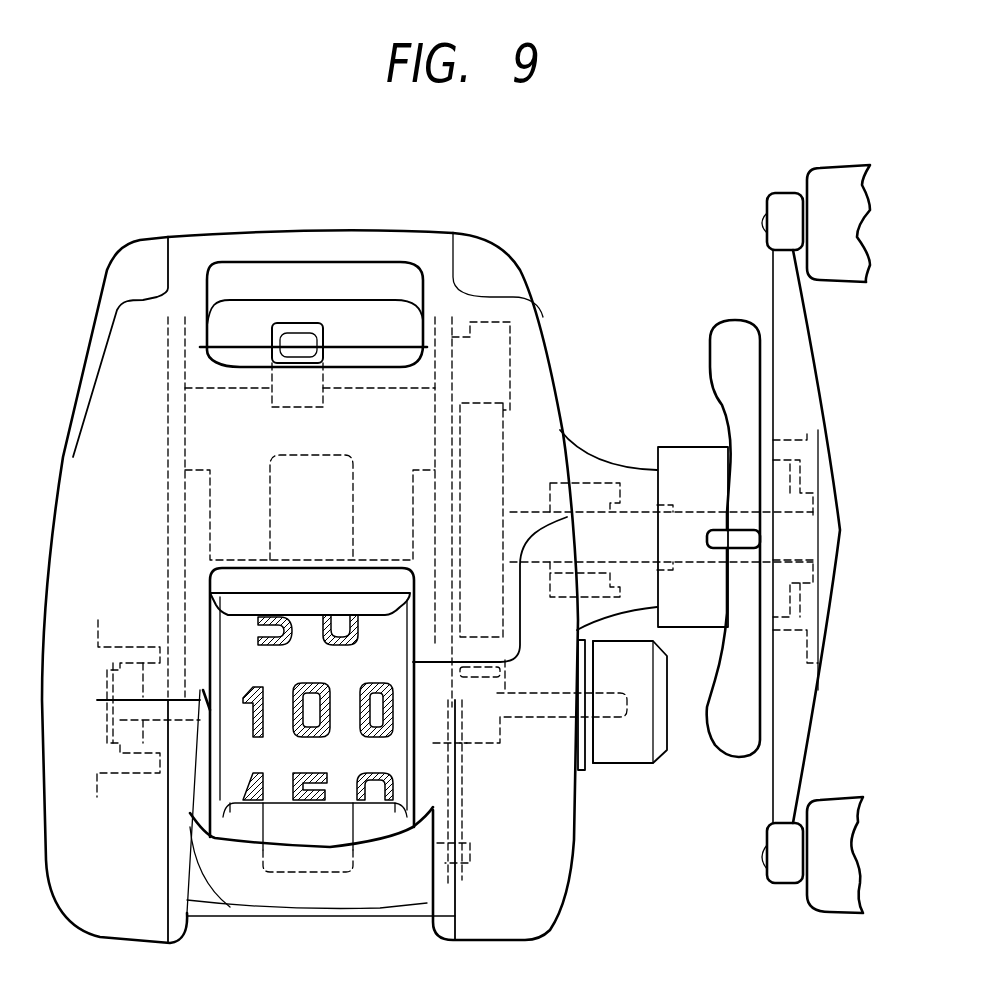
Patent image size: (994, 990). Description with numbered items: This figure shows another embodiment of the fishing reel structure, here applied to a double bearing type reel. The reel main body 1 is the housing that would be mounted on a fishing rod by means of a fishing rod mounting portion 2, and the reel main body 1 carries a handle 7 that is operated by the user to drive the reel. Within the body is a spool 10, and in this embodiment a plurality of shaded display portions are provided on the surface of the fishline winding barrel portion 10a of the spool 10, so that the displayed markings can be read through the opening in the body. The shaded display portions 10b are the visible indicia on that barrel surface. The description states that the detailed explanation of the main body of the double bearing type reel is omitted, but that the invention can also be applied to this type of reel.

The reel main body 1 is at (537, 233).
The fishing rod mounting portion 2 is at (340, 823).
The handle 7 is at (778, 272).
The spool 10 is at (237, 638).
The fishline winding barrel portion 10a is at (223, 810).
The display digits 10b is at (360, 632).